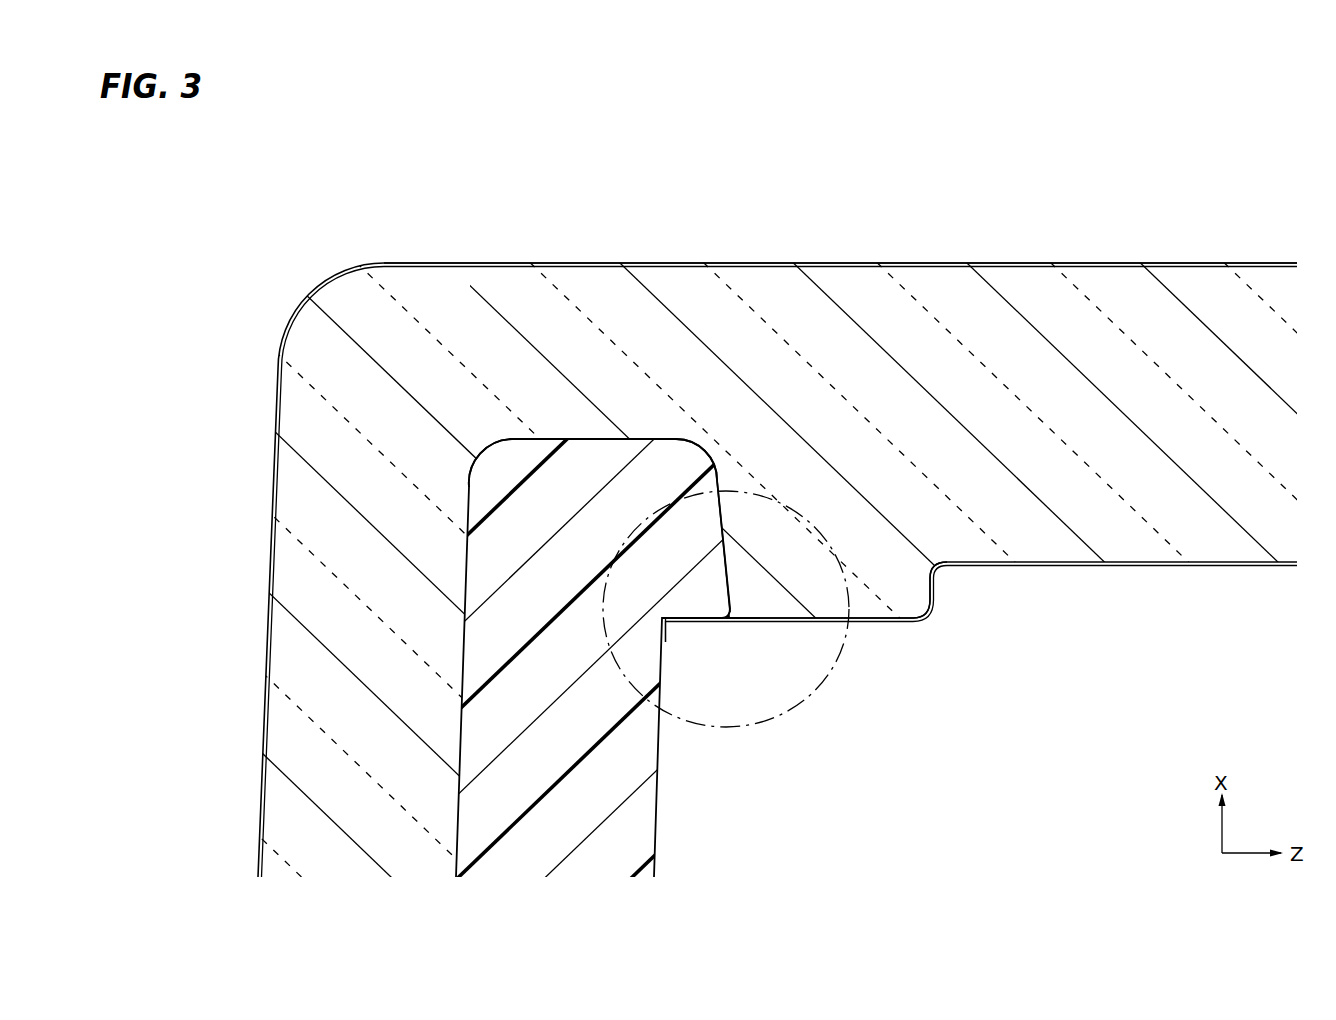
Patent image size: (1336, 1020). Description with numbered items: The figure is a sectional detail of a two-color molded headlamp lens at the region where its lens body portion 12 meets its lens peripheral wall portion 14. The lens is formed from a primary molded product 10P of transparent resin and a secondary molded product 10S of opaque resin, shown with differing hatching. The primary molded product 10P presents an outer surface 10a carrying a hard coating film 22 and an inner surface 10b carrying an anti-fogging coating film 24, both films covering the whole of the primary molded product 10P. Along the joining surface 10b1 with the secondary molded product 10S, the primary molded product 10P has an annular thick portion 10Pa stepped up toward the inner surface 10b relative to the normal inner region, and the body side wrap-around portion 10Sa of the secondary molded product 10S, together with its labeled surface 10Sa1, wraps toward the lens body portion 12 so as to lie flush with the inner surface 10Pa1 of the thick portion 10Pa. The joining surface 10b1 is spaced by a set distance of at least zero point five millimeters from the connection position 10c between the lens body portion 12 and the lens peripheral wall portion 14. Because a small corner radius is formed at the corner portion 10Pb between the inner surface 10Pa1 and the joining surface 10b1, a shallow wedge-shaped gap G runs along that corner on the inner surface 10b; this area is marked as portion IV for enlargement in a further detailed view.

The primary molded product 10P is at (668, 514).
The secondary molded product 10S is at (597, 636).
The body side wrap-around portion 10Sa is at (693, 548).
The step surface of side wall 10Sa1 is at (700, 622).
The thick portion 10Pa is at (877, 570).
The inner surface of the thick portion 10Pa1 is at (860, 620).
The corner portion 10Pb is at (733, 618).
The outer surface 10a is at (1107, 263).
The inner surface 10b is at (1108, 563).
The joining surface 10b1 is at (723, 518).
The connection position 10c is at (667, 622).
The lens body portion 12 is at (977, 335).
The lens peripheral wall portion 14 is at (363, 780).
The hard coating film 22 is at (1203, 263).
The anti-fogging coating film 24 is at (1206, 563).
The gap G is at (733, 622).
The detailed view portion IV is at (805, 699).